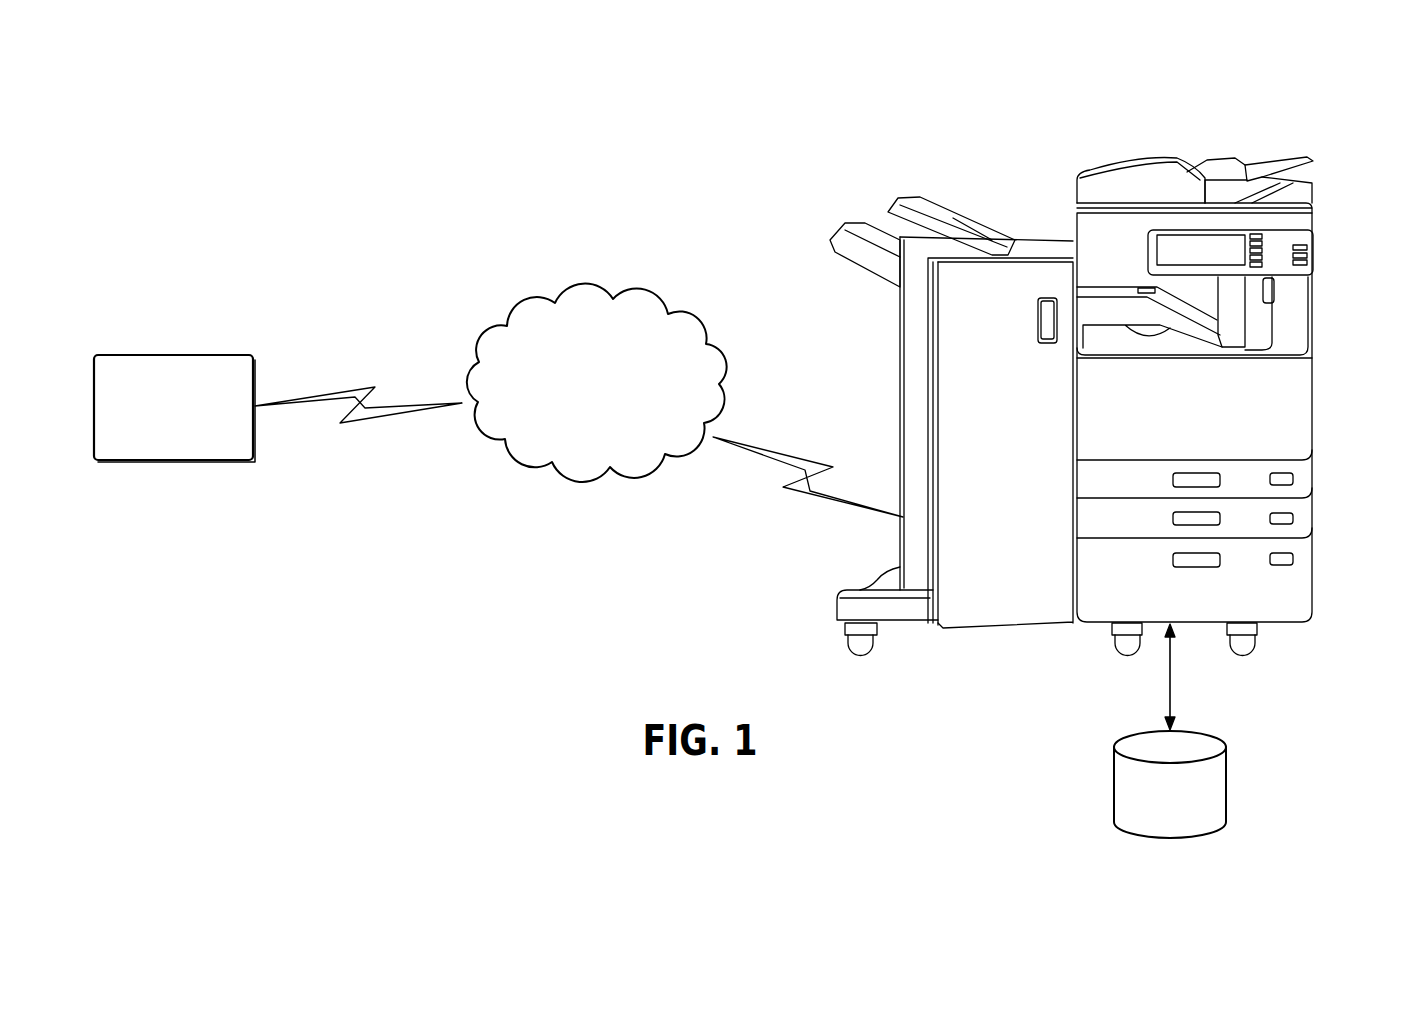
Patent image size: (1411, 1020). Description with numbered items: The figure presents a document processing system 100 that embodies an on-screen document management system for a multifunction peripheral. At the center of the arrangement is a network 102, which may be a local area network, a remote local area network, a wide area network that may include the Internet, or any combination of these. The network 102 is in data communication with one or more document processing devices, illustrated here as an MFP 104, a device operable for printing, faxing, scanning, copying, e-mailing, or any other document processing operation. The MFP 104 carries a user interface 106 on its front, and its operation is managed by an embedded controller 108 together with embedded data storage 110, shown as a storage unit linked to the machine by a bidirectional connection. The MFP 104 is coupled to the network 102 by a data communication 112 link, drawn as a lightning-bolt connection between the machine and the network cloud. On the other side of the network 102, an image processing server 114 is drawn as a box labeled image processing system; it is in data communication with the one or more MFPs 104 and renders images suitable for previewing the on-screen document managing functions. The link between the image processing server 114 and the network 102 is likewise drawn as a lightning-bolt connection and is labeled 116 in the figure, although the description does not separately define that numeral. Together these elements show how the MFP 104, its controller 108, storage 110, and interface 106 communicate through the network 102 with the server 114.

The document processing system 100 is at (256, 172).
The network 102 is at (607, 284).
The MFP 104 is at (1110, 162).
The user interface 106 is at (1305, 247).
The embedded controller 108 is at (1297, 383).
The embedded data storage 110 is at (1228, 768).
The data communication 112 is at (810, 493).
The image processing server 114 is at (115, 355).
The network connection 116 is at (373, 425).